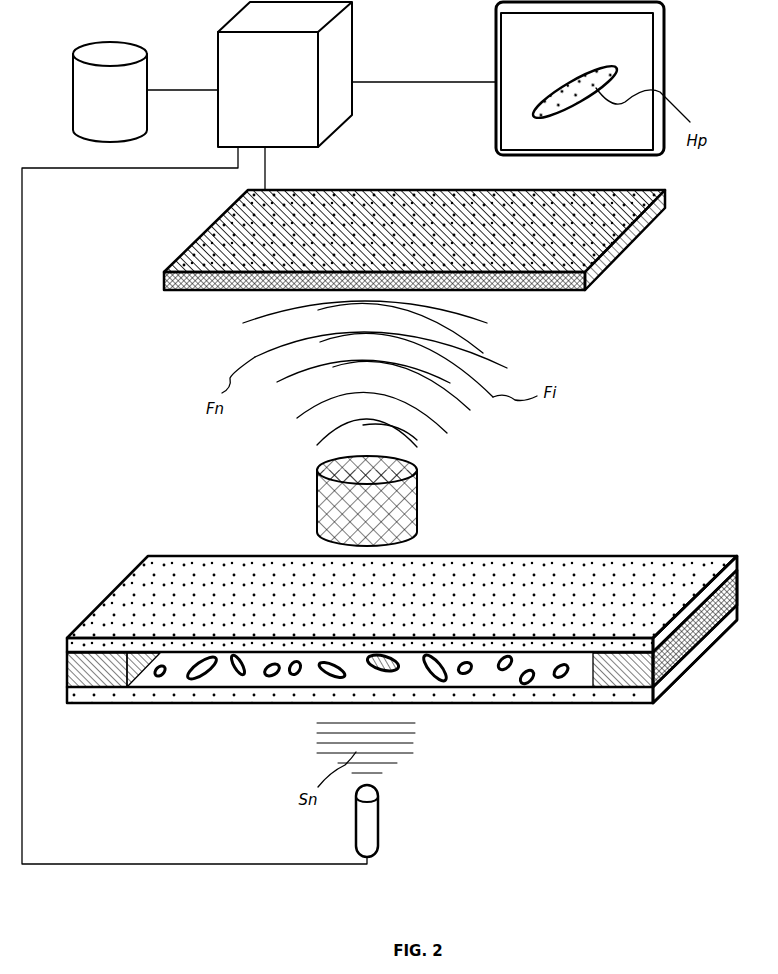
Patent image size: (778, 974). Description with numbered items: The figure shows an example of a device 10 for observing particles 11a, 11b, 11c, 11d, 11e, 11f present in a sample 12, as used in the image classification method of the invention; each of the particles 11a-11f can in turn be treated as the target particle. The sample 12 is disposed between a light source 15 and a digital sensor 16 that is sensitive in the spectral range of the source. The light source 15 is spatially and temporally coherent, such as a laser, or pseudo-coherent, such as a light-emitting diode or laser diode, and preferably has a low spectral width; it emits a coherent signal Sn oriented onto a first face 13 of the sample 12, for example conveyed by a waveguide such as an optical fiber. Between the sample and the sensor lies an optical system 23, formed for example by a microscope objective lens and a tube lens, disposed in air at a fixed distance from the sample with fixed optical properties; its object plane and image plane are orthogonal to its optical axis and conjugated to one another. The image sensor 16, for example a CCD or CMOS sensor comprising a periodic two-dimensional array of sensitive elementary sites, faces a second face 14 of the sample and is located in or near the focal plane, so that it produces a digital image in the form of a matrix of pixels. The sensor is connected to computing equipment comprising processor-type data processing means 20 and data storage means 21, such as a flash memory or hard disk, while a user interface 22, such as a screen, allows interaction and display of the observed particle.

The device for observing a particle 10 is at (748, 387).
The particle 11a is at (563, 662).
The particle 11b is at (540, 683).
The particle 11c is at (507, 668).
The particle 11d is at (205, 680).
The particle 11e is at (155, 676).
The particle 11f is at (377, 665).
The sample 12 is at (640, 704).
The first face of the sample 13 is at (469, 717).
The second face of the sample 14 is at (535, 536).
The light source 15 is at (370, 826).
The digital sensor 16 is at (172, 290).
The data processing means 20 is at (285, 74).
The data storage means 21 is at (110, 92).
The user interface 22 is at (500, 118).
The optical system 23 is at (317, 498).